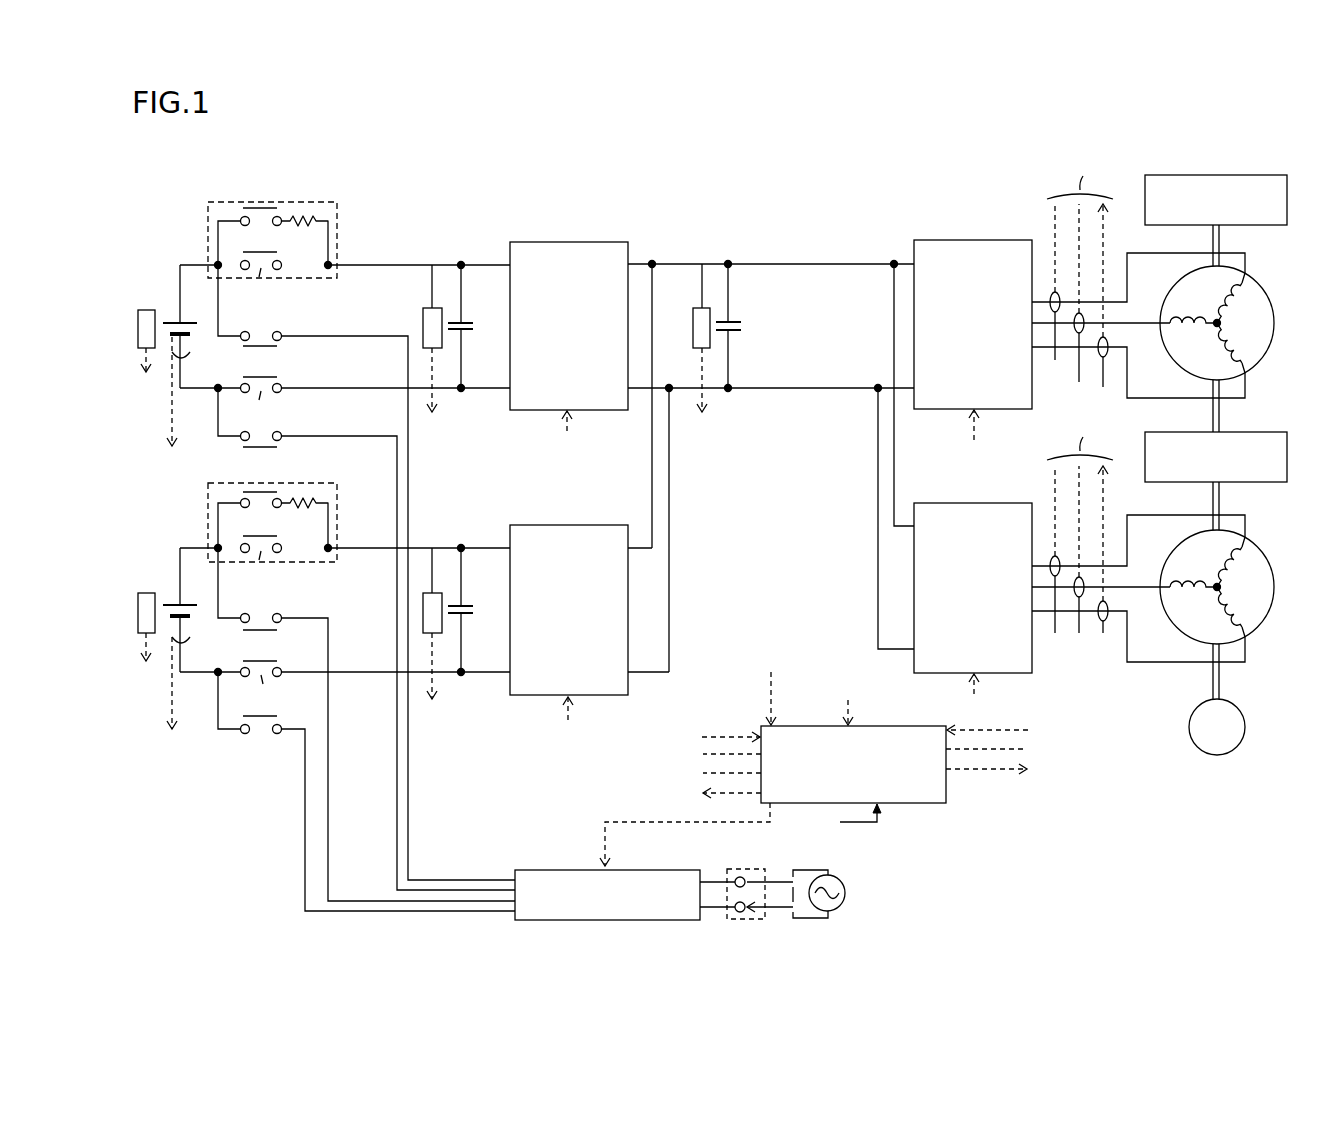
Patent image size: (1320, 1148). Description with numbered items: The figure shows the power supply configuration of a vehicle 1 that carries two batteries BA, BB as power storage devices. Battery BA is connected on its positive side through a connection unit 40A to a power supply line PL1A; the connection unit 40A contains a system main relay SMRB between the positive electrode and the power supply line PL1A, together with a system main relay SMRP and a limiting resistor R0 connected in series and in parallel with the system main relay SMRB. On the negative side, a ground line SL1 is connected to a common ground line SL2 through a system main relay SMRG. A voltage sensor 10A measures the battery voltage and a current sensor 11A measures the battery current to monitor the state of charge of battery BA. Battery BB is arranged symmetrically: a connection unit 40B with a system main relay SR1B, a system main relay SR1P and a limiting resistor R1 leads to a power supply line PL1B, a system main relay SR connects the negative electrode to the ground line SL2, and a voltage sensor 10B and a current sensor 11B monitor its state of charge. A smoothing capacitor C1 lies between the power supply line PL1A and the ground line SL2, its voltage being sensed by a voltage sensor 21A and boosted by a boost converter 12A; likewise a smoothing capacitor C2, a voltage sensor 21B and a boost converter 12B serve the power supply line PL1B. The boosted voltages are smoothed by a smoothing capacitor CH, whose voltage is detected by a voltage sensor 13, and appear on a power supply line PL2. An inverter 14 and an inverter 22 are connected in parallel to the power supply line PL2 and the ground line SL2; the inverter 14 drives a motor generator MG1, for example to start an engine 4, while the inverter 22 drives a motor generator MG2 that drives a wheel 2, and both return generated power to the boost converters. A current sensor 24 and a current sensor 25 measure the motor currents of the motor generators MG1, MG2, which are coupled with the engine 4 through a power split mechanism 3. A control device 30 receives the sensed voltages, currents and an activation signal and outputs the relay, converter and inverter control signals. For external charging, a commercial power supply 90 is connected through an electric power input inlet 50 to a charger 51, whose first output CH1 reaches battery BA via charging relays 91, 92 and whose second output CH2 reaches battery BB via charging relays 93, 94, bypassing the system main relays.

The vehicle 1 is at (990, 161).
The wheel 2 is at (1246, 727).
The power split mechanism 3 is at (1250, 432).
The engine 4 is at (1262, 175).
The voltage sensor 10A is at (147, 310).
The voltage sensor 10B is at (147, 593).
The current sensor 11A is at (191, 356).
The current sensor 11B is at (191, 641).
The boost converter 12A is at (575, 242).
The boost converter 12B is at (575, 525).
The voltage sensor 13 is at (701, 308).
The inverter 14 is at (960, 240).
The voltage sensor 21A is at (433, 308).
The voltage sensor 21B is at (433, 593).
The inverter 22 is at (988, 503).
The current sensor 24 is at (1083, 280).
The current sensor 25 is at (1084, 535).
The control device 30 is at (883, 803).
The connection unit 40A is at (261, 307).
The connection unit 40B is at (261, 595).
The electric power input inlet 50 is at (748, 869).
The charger 51 is at (583, 876).
The commercial power supply 90 is at (843, 880).
The charging relay 91 is at (262, 328).
The charging relay 92 is at (263, 432).
The charging relay 93 is at (262, 611).
The charging relay 94 is at (262, 722).
The battery BA is at (173, 320).
The battery BB is at (173, 602).
The smoothing capacitor C1 is at (468, 333).
The smoothing capacitor C2 is at (469, 617).
The smoothing capacitor CH is at (738, 320).
The limiting resistor R0 is at (318, 216).
The limiting resistor R1 is at (318, 499).
The system main relay SMRP is at (262, 207).
The system main relay SMRB is at (259, 280).
The system main relay SMRG is at (259, 400).
The system main relay SR1P is at (262, 490).
The system main relay SR1B is at (259, 564).
The system main relay SR is at (261, 683).
The motor generator MG1 is at (1255, 280).
The motor generator MG2 is at (1255, 540).
The power supply line PL1A is at (442, 262).
The power supply line PL1B is at (442, 546).
The power supply line PL2 is at (678, 262).
The ground line SL1 is at (192, 393).
The ground line SL2 is at (362, 393).
The first output CH1 is at (497, 893).
The second output CH2 is at (452, 905).